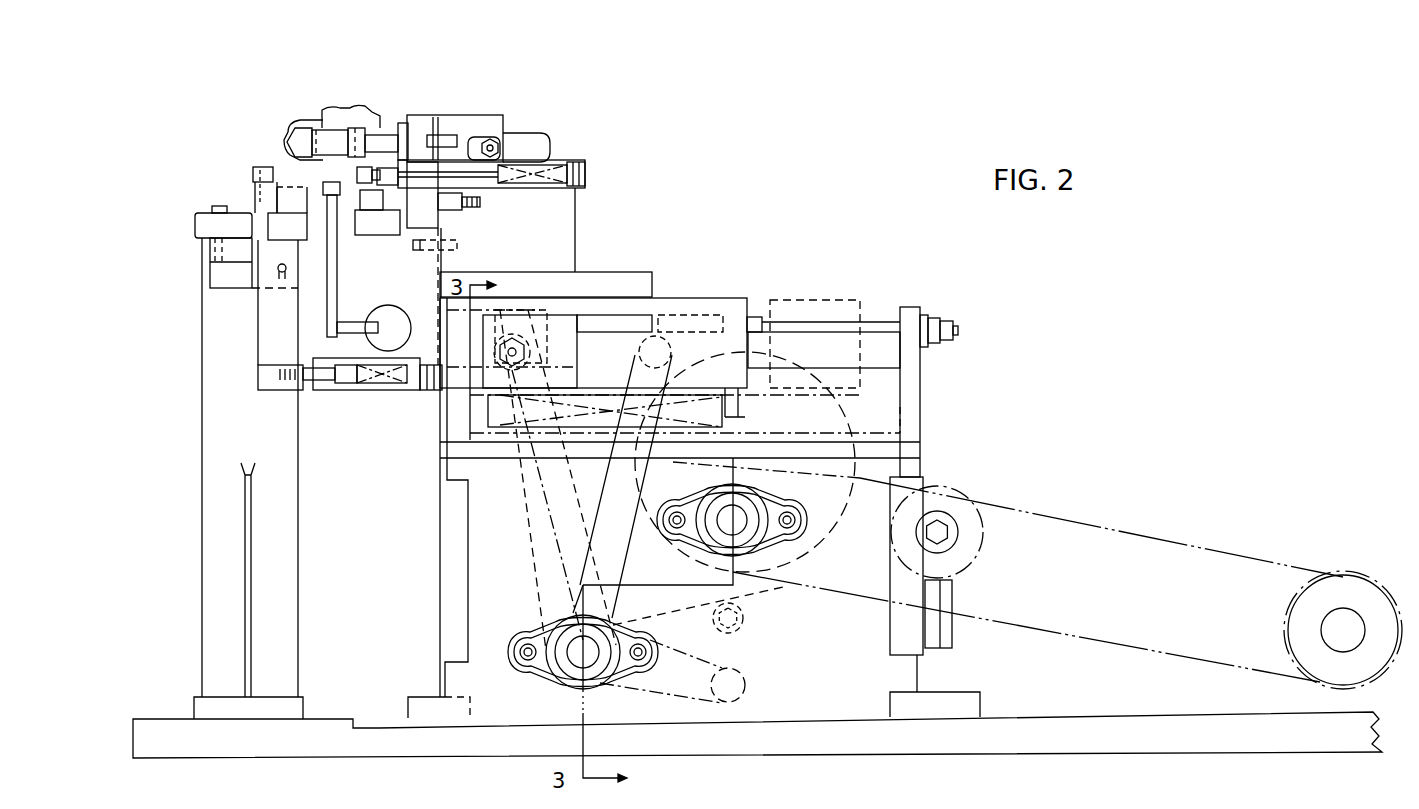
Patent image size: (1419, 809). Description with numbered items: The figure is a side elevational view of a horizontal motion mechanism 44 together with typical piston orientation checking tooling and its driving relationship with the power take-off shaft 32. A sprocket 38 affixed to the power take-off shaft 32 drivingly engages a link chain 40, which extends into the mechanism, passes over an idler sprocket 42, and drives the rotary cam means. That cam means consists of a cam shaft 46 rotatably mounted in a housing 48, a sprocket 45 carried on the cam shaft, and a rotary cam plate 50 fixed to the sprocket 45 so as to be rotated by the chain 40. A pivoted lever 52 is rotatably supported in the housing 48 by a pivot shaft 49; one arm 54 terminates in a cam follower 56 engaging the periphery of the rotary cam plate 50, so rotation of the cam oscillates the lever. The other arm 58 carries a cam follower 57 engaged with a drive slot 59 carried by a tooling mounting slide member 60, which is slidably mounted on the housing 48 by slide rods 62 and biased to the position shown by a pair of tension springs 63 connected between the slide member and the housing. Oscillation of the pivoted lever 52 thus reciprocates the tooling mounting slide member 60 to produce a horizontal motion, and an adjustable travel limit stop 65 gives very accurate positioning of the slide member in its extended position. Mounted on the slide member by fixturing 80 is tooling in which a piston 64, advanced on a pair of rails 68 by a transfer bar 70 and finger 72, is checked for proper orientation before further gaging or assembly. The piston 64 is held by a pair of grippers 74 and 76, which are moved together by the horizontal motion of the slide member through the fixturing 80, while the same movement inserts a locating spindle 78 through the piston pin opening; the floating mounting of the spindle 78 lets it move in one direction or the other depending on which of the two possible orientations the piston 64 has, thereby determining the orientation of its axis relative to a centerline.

The power take-off shaft 32 is at (1333, 630).
The sprocket 38 is at (1387, 565).
The link chain 40 is at (1160, 534).
The idler sprocket 42 is at (958, 532).
The horizontal motion mechanism 44 is at (630, 266).
The sprocket 45 is at (704, 472).
The cam shaft 46 is at (740, 530).
The housing 48 is at (907, 460).
The pivot shaft 49 is at (577, 660).
The rotary cam plate 50 is at (633, 505).
The pivoted lever 52 is at (532, 603).
The arm 54 is at (680, 609).
The cam follower 56 is at (747, 627).
The cam follower 57 is at (530, 332).
The arm 58 is at (525, 542).
The drive slot 59 is at (519, 302).
The tooling mounting slide member 60 is at (723, 298).
The slide rods 62 is at (875, 327).
The tension springs 63 is at (532, 425).
The piston 64 is at (350, 110).
The adjustable travel limit stop 65 is at (927, 313).
The rails 68 is at (292, 202).
The transfer bar 70 is at (388, 318).
The finger 72 is at (333, 263).
The gripper 74 is at (273, 165).
The gripper 76 is at (402, 135).
The locating spindle 78 is at (327, 123).
The fixturing 80 is at (577, 230).